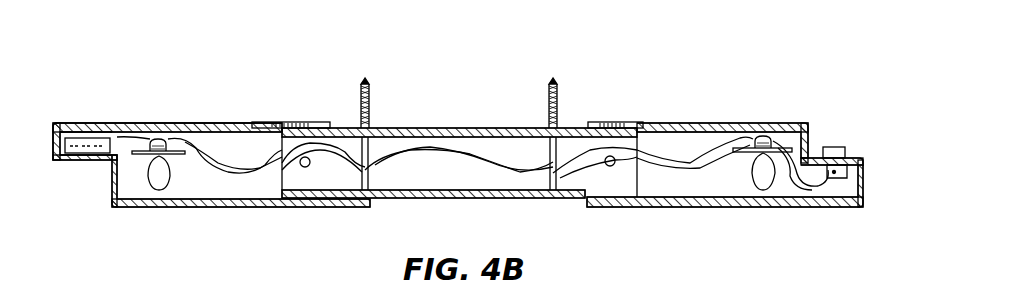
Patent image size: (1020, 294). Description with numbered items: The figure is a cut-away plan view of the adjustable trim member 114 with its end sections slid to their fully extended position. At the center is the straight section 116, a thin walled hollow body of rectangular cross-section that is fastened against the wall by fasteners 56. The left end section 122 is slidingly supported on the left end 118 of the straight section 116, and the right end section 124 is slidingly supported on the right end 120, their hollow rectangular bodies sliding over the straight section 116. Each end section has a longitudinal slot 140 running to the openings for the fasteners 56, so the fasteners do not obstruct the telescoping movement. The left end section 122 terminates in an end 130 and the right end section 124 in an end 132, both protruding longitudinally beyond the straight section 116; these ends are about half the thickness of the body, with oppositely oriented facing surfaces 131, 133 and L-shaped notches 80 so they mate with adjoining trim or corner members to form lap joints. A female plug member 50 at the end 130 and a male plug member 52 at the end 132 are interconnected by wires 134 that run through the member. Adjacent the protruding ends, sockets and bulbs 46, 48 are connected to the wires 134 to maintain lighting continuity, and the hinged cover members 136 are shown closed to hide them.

The socket 46 is at (148, 190).
The bulb 48 is at (158, 164).
The female plug member 50 is at (82, 103).
The male plug member 52 is at (850, 158).
The fastener 56 is at (366, 78).
The L-shaped notch 80 is at (150, 1).
The adjustable trim member 114 is at (664, 33).
The straight section 116 is at (514, 198).
The left end 118 is at (258, 208).
The right end 120 is at (638, 205).
The left end section 122 is at (208, 124).
The right end section 124 is at (735, 126).
The end 130 is at (78, 157).
The facing surface 131 is at (92, 160).
The end 132 is at (859, 207).
The facing surface 133 is at (814, 158).
The wires 134 is at (464, 150).
The hinged cover member 136 is at (180, 208).
The slot 140 is at (264, 122).